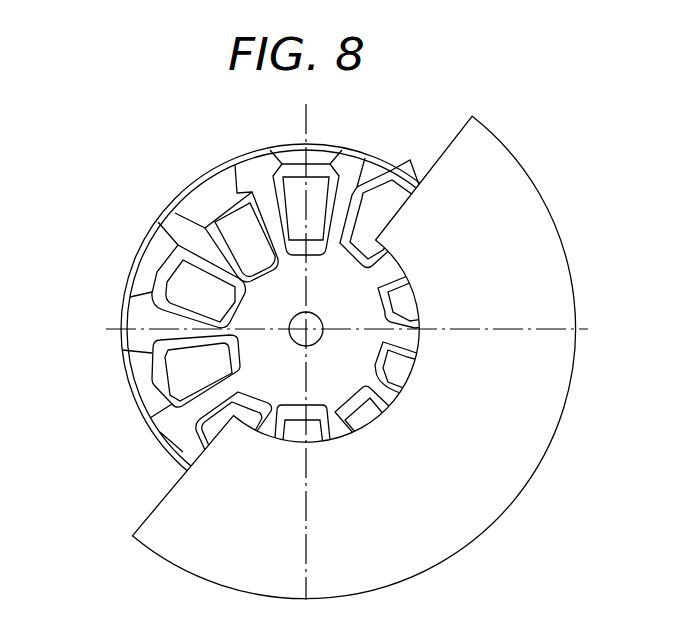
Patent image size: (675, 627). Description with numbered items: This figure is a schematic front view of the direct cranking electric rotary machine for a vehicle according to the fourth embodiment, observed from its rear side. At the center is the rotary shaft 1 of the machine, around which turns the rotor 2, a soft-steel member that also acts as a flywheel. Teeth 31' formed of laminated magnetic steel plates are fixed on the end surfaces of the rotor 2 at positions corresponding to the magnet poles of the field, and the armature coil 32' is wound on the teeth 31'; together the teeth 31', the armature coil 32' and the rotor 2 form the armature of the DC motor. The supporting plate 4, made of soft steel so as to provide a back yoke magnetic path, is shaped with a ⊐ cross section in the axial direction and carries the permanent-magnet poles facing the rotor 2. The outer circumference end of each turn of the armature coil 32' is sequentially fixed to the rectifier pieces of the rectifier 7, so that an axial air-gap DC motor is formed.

The rotary shaft 1 is at (322, 342).
The rotor 2 is at (320, 292).
The supporting plate 4 is at (497, 173).
The rectifier 7 is at (207, 173).
The teeth 31' is at (259, 285).
The armature coil 32' is at (249, 280).